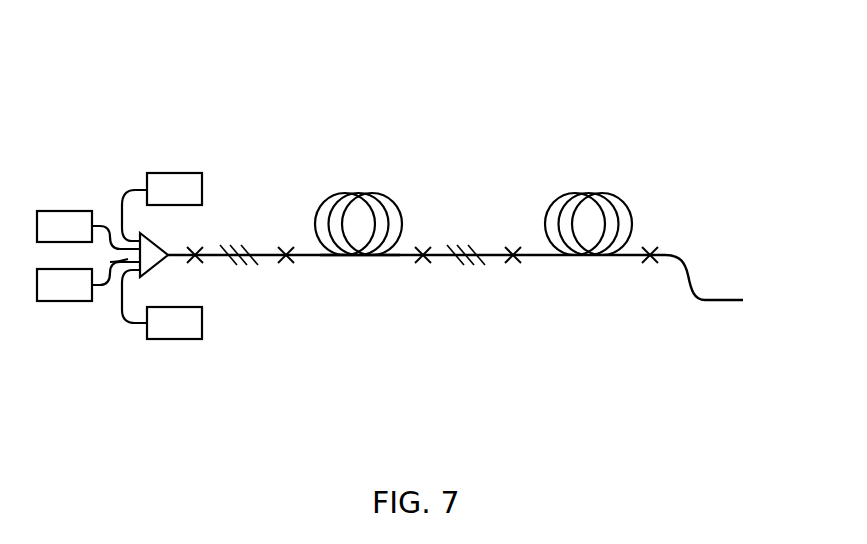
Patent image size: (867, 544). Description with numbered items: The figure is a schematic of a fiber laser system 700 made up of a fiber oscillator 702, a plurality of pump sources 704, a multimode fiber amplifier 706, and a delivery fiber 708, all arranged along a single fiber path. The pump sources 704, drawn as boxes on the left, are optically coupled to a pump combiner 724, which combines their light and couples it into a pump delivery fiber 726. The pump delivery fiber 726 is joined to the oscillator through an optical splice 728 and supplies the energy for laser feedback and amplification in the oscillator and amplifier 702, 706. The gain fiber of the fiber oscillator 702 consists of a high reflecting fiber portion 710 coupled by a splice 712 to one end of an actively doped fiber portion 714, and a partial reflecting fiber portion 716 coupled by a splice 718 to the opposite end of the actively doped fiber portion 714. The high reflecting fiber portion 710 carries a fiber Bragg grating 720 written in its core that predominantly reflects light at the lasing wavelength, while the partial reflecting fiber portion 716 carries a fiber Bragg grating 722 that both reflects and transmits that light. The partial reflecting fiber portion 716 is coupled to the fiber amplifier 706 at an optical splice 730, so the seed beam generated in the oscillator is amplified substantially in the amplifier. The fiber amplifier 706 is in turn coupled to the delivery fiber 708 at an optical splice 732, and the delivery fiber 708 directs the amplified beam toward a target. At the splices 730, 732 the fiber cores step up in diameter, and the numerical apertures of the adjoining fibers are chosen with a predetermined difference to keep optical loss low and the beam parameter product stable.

The fiber laser system 700 is at (232, 77).
The fiber oscillator 702 is at (368, 159).
The pump sources 704 is at (119, 256).
The multimode fiber amplifier 706 is at (642, 160).
The delivery fiber 708 is at (693, 295).
The high reflecting (HR) fiber portion 710 is at (252, 292).
The splice 712 is at (287, 262).
The actively doped fiber portion 714 is at (377, 258).
The partial reflecting (PR) fiber portion 716 is at (474, 188).
The splice 718 is at (423, 262).
The fiber Bragg grating 720 is at (243, 249).
The fiber Bragg grating 722 is at (463, 264).
The pump combiner 724 is at (148, 261).
The pump delivery fiber 726 is at (170, 250).
The optical splice 728 is at (200, 261).
The optical splice 730 is at (513, 262).
The optical splice 732 is at (653, 262).